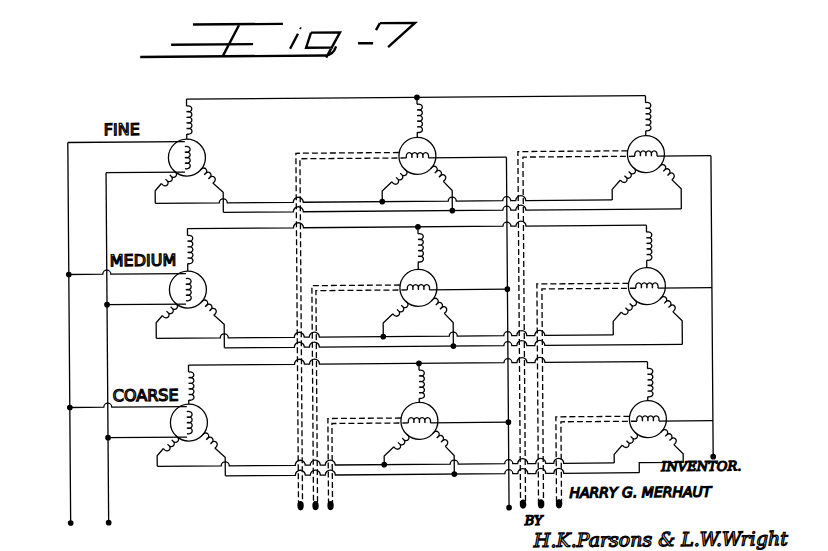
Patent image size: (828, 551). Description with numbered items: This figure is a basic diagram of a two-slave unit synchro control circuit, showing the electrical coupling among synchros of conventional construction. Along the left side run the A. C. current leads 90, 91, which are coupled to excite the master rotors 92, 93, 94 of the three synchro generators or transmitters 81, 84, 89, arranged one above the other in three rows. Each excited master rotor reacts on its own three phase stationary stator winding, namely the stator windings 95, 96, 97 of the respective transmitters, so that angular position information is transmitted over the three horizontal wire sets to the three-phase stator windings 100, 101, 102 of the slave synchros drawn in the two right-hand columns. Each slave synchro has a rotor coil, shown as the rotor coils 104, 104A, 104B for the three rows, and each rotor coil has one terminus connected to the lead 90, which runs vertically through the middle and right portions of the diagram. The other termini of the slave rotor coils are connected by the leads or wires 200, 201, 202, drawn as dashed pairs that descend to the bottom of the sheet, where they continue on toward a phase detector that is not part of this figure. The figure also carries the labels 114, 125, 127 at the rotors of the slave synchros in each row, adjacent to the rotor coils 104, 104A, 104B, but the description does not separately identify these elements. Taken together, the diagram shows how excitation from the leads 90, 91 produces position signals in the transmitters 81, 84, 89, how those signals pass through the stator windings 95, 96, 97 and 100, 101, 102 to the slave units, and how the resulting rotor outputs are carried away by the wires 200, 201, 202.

The synchro generator or transmitter 81 is at (200, 146).
The synchro generator or transmitter 84 is at (200, 276).
The synchro generator or transmitter 89 is at (200, 410).
The A. C. current lead 90 is at (69, 228).
The A. C. current lead 91 is at (108, 228).
The master rotor 92 is at (192, 158).
The master rotor 93 is at (193, 288).
The master rotor 94 is at (193, 422).
The three phase stationary stator winding 95 is at (192, 122).
The three phase stationary stator winding 96 is at (193, 248).
The three phase stationary stator winding 97 is at (193, 388).
The three-phase stator winding 100 is at (412, 113).
The three-phase stator winding 101 is at (424, 245).
The three-phase stator winding 102 is at (426, 385).
The rotor coil 104 is at (425, 151).
The rotor coil 104A is at (428, 287).
The rotor coil 104B is at (428, 420).
The rotor winding of fine control transformer 114 is at (399, 148).
The rotor winding of medium control transformer 125 is at (399, 264).
The rotor winding of coarse control transformer 127 is at (401, 405).
The lead or wire 200 is at (296, 497).
The lead or wire 201 is at (316, 512).
The lead or wire 202 is at (332, 512).